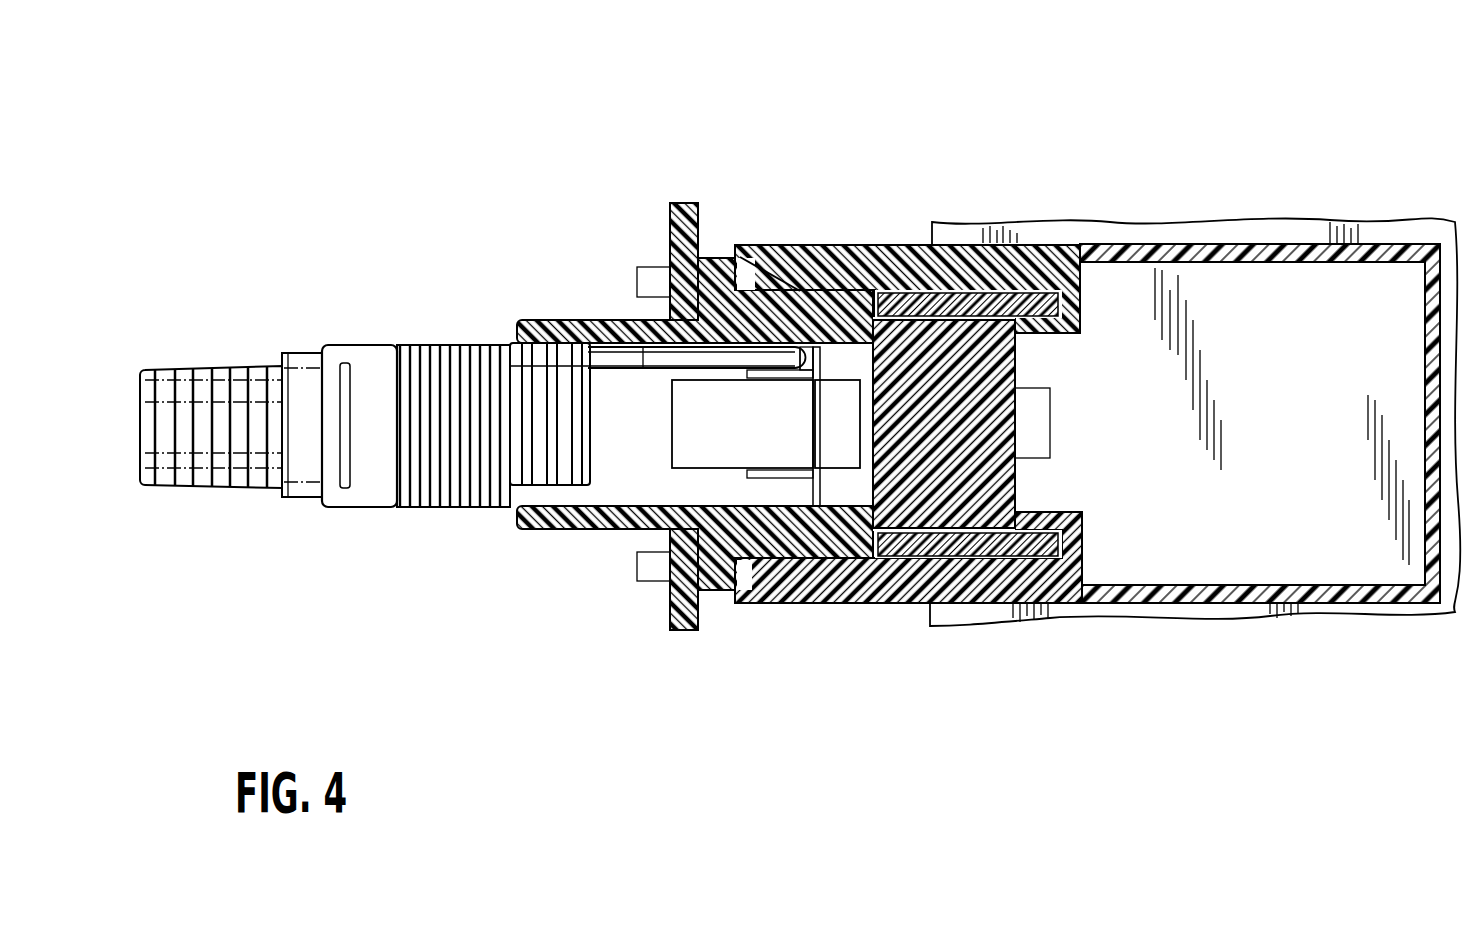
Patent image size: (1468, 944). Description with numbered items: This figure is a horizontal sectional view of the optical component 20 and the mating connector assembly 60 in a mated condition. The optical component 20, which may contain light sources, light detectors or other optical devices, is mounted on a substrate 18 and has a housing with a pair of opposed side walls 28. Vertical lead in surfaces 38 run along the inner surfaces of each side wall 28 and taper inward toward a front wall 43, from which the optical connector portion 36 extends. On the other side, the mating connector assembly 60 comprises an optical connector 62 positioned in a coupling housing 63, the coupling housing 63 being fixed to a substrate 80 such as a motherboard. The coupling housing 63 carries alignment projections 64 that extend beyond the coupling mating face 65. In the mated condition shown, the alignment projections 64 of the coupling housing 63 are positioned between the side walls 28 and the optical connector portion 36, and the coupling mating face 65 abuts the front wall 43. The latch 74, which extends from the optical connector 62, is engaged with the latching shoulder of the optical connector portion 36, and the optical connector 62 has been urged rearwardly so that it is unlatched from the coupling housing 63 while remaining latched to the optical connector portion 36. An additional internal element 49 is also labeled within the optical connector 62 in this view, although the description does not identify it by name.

The substrate 18 is at (1262, 214).
The optical component 20 is at (918, 243).
The side walls 28 is at (972, 243).
The optical connector portion 36 is at (973, 510).
The vertical lead in surfaces 38 is at (755, 290).
The front wall 43 is at (855, 298).
The contact retainer 49 is at (814, 448).
The mating connector assembly 60 is at (708, 257).
The optical connector 62 is at (405, 508).
The coupling housing 63 is at (773, 290).
The alignment projections 64 is at (1008, 303).
The coupling mating face 65 is at (875, 320).
The latch 74 is at (693, 447).
The substrate 80 is at (665, 205).